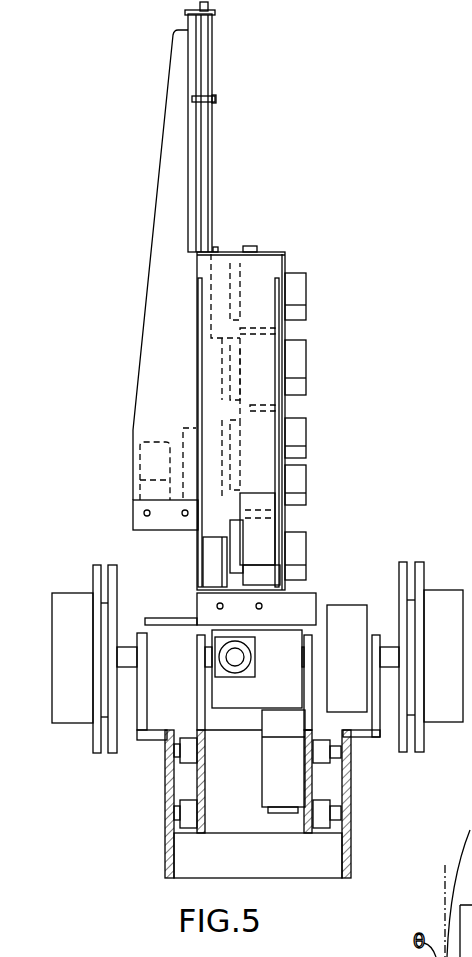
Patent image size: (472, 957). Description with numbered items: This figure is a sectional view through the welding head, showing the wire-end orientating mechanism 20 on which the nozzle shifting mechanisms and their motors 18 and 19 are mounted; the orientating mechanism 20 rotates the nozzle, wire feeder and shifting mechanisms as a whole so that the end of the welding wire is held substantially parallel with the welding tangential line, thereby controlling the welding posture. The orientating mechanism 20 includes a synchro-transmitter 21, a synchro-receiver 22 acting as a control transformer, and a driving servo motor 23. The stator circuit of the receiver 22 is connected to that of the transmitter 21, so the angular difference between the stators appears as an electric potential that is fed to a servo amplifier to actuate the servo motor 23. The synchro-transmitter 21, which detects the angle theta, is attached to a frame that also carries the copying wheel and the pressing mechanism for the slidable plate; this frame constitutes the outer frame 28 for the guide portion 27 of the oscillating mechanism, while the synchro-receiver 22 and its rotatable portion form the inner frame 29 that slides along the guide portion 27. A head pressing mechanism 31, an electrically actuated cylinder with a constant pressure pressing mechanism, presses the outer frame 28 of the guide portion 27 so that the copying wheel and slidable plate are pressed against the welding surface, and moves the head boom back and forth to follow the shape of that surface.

The motors of first nozzle shifting mechanism 18 is at (147, 466).
The motors of second nozzle shifting mechanism 19 is at (183, 430).
The wire-end orientating mechanism 20 is at (296, 708).
The synchro-transmitter 21 is at (443, 600).
The synchro-receiver 22 is at (346, 605).
The driving servo motor 23 is at (268, 790).
The guide portion 27 is at (332, 814).
The outer frame 28 is at (351, 781).
The inner frame 29 is at (197, 768).
The head pressing mechanism 31 is at (245, 668).